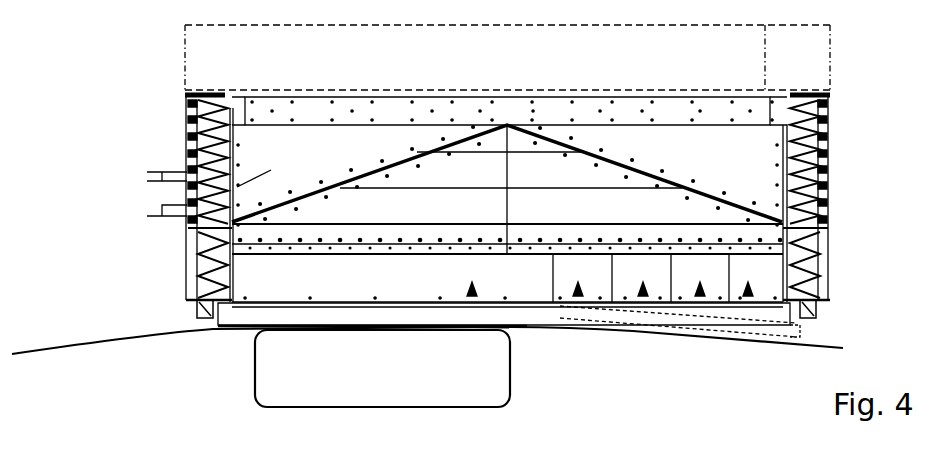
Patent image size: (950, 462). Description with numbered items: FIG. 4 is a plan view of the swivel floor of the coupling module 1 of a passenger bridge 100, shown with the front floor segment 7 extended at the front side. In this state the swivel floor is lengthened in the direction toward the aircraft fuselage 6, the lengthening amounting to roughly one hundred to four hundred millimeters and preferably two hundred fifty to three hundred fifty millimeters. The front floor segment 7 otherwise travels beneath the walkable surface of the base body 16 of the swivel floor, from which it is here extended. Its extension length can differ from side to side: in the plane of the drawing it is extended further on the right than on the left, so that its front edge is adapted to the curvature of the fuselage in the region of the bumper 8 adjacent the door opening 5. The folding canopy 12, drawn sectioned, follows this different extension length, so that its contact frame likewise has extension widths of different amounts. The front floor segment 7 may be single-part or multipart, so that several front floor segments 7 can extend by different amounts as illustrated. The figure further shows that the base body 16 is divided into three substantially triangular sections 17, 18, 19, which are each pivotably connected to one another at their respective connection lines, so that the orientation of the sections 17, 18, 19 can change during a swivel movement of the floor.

The passenger bridge 100 is at (183, 22).
The coupling module 1 is at (148, 153).
The folding canopy 12 is at (187, 125).
The section 17 is at (187, 186).
The section 18 is at (447, 180).
The section 19 is at (720, 175).
The front floor segment 7 is at (468, 300).
The base body 16 is at (710, 213).
The bumper 8 is at (352, 312).
The door opening 5 is at (255, 363).
The aircraft fuselage 6 is at (137, 333).